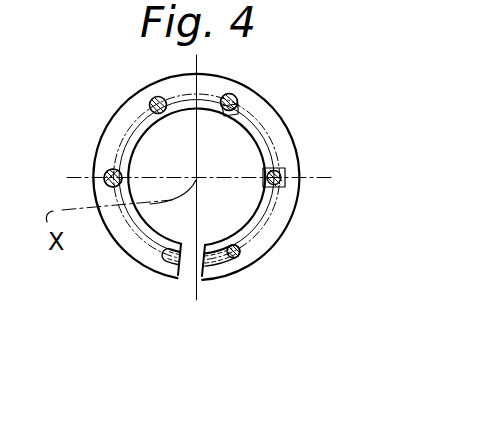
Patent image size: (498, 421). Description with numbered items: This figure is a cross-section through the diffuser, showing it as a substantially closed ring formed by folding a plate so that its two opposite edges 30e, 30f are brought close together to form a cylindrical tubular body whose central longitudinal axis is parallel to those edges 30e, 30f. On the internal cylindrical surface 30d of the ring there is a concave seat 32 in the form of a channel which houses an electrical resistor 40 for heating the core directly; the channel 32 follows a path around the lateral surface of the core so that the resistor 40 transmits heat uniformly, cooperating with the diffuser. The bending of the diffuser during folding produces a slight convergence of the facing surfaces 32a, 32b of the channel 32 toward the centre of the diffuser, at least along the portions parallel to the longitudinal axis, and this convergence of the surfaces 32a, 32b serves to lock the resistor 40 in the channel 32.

The internal cylindrical surface 30d is at (249, 209).
The edge of the plate 30e is at (183, 277).
The edge of the plate 30f is at (207, 277).
The concave seat 32 is at (233, 97).
The facing surface of the channel 32a is at (229, 110).
The facing surface of the channel 32b is at (226, 113).
The electrical resistor 40 is at (108, 170).